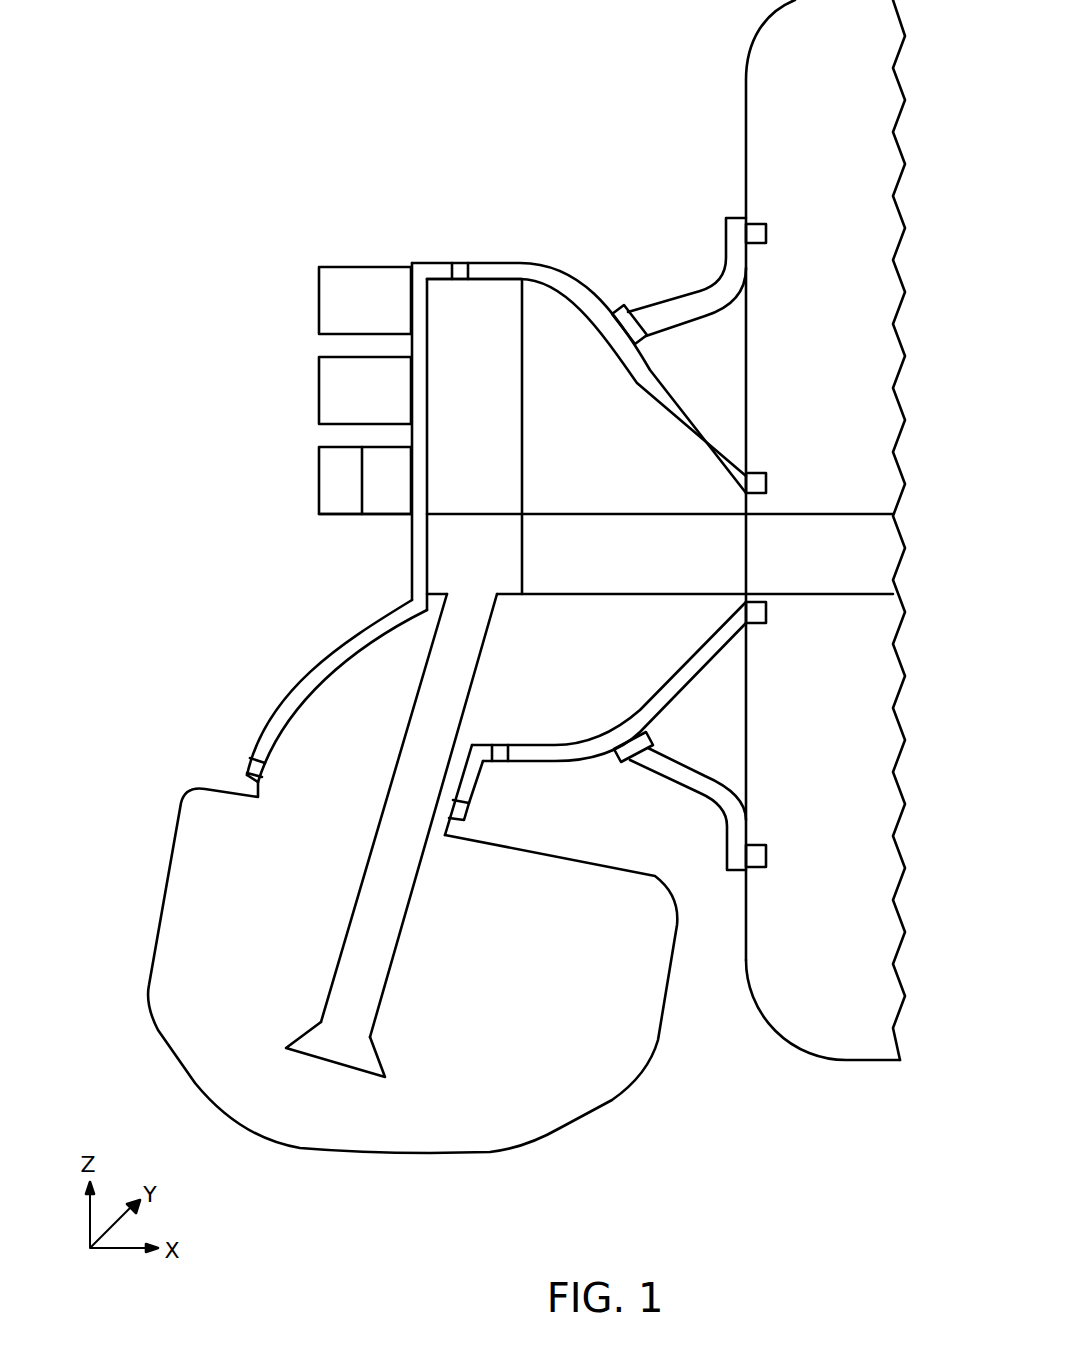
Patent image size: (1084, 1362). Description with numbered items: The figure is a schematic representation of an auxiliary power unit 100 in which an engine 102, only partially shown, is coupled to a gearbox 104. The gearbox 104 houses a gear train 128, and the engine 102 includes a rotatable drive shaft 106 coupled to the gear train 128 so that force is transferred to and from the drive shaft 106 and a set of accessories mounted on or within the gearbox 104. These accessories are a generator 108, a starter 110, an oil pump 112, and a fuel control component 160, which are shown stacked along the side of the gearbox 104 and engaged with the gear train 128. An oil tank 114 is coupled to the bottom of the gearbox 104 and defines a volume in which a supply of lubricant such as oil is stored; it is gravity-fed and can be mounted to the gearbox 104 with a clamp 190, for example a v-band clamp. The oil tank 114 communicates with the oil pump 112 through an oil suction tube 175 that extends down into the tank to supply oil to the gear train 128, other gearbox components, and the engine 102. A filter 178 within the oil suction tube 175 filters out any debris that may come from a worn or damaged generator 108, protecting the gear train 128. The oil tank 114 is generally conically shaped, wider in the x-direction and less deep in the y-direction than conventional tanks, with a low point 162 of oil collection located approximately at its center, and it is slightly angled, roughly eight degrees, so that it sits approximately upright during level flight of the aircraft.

The auxiliary power unit 100 is at (727, 1080).
The engine 102 is at (857, 299).
The gearbox 104 is at (407, 573).
The drive shaft 106 is at (820, 513).
The generator 108 is at (319, 395).
The starter 110 is at (319, 303).
The oil pump 112 is at (392, 518).
The oil tank 114 is at (565, 948).
The gear train 128 is at (507, 386).
The fuel control component 160 is at (319, 487).
The low point 162 is at (288, 1145).
The oil suction tube 175 is at (393, 770).
The filter 178 is at (333, 1065).
The clamp 190 is at (248, 760).